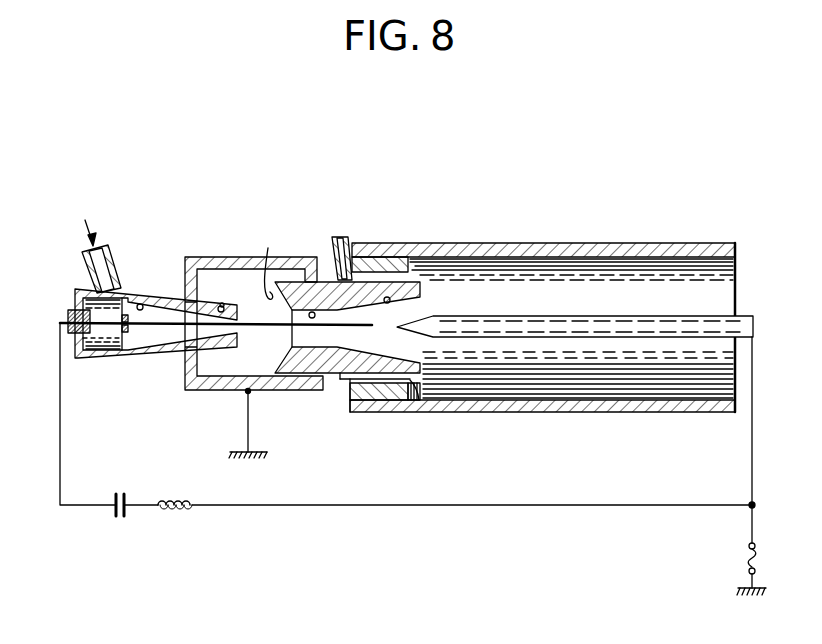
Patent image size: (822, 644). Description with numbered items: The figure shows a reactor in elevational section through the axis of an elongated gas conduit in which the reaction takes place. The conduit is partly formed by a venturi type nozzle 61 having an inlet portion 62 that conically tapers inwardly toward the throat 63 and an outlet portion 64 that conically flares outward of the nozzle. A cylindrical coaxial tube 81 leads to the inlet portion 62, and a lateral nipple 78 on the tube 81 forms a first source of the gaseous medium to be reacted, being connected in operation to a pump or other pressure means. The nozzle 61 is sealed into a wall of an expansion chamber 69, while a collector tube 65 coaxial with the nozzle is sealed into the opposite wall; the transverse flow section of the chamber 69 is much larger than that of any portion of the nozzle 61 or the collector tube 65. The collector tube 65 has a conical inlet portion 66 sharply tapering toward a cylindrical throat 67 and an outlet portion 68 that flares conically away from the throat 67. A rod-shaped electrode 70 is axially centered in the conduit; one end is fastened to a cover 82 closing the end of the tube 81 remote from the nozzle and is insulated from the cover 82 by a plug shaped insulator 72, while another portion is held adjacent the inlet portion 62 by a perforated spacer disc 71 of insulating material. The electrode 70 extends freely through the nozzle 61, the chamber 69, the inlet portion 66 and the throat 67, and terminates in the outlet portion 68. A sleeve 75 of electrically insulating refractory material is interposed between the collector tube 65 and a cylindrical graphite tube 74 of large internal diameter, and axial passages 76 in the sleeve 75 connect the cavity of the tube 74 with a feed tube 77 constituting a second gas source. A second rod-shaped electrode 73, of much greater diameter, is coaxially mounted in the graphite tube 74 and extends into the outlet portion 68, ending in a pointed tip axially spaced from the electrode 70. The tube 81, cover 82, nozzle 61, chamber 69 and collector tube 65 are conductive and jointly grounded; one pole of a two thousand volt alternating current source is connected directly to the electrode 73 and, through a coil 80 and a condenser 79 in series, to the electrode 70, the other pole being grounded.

The venturi type nozzle 61 is at (150, 355).
The inlet portion 62 is at (140, 304).
The throat 63 is at (218, 308).
The outlet portion 64 is at (222, 303).
The collector tube 65 is at (332, 366).
The conical inlet portion 66 is at (272, 260).
The cylindrical throat 67 is at (328, 303).
The outlet portion 68 is at (388, 297).
The expansion chamber 69 is at (248, 269).
The rod-shaped electrode 70 is at (72, 243).
The perforated spacer disc 71 is at (122, 350).
The plug shaped insulator 72 is at (73, 316).
The second rod-shaped electrode 73 is at (677, 324).
The cylindrical graphite tube 74 is at (530, 252).
The sleeve 75 is at (392, 392).
The axial passages 76 is at (418, 398).
The feed tube 77 is at (352, 244).
The lateral nipple 78 is at (118, 276).
The condenser 79 is at (120, 490).
The coil 80 is at (176, 492).
The cylindrical coaxial tube 81 is at (88, 386).
The cover 82 is at (78, 338).